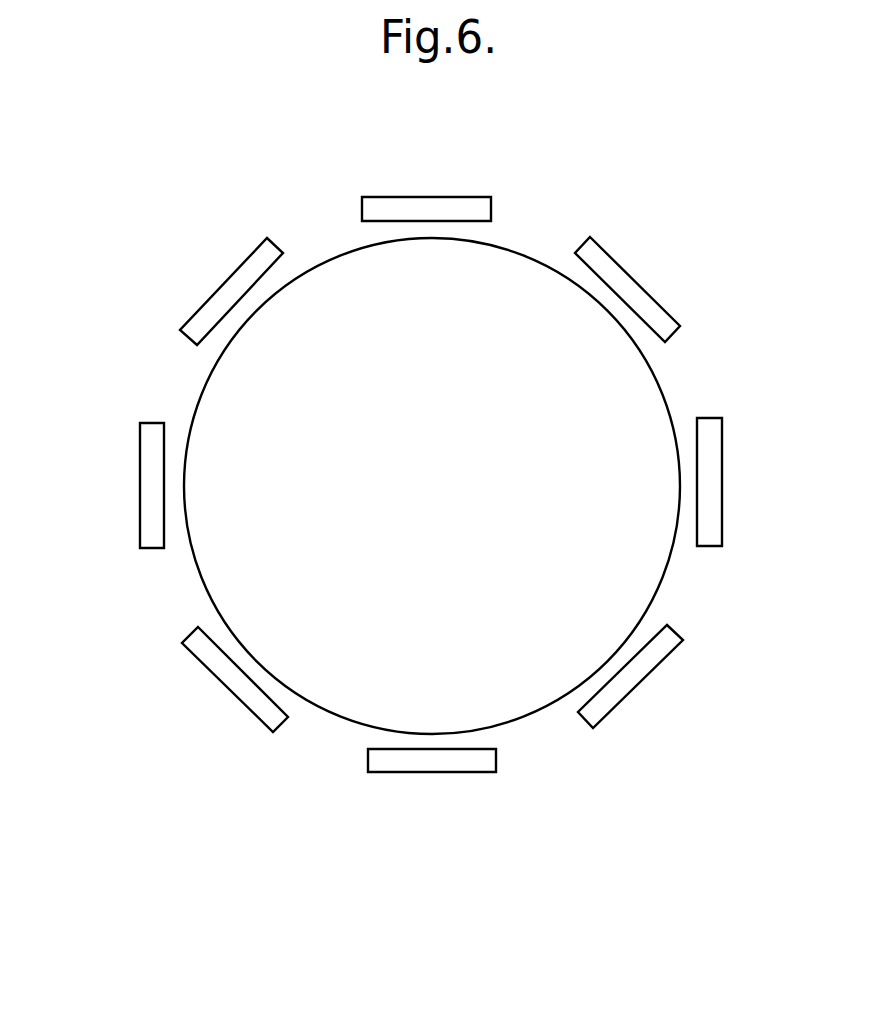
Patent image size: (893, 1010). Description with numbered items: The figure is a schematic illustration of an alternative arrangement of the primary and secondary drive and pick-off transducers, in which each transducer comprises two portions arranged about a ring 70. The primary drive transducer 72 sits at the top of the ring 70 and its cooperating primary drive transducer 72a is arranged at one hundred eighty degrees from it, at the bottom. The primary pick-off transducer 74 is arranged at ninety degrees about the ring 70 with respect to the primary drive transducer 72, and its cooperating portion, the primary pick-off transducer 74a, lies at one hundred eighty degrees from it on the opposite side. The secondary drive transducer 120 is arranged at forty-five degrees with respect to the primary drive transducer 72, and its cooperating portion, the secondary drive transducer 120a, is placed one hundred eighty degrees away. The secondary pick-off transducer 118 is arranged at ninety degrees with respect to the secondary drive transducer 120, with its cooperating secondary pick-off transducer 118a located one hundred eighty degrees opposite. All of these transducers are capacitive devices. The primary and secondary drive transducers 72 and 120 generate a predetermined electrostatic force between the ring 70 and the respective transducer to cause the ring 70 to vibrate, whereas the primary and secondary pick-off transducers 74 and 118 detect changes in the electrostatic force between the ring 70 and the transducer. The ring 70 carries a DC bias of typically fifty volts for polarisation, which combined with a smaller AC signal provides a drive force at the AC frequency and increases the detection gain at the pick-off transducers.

The ring 70 is at (665, 392).
The primary drive transducer 72 is at (424, 212).
The cooperating primary drive transducer 72a is at (432, 765).
The primary pick-off transducer 74 is at (717, 483).
The cooperating primary pick-off transducer 74a is at (148, 492).
The secondary pick-off transducer 118 is at (635, 680).
The cooperating secondary pick-off transducer 118a is at (228, 293).
The secondary drive transducer 120 is at (632, 287).
The cooperating secondary drive transducer 120a is at (232, 685).